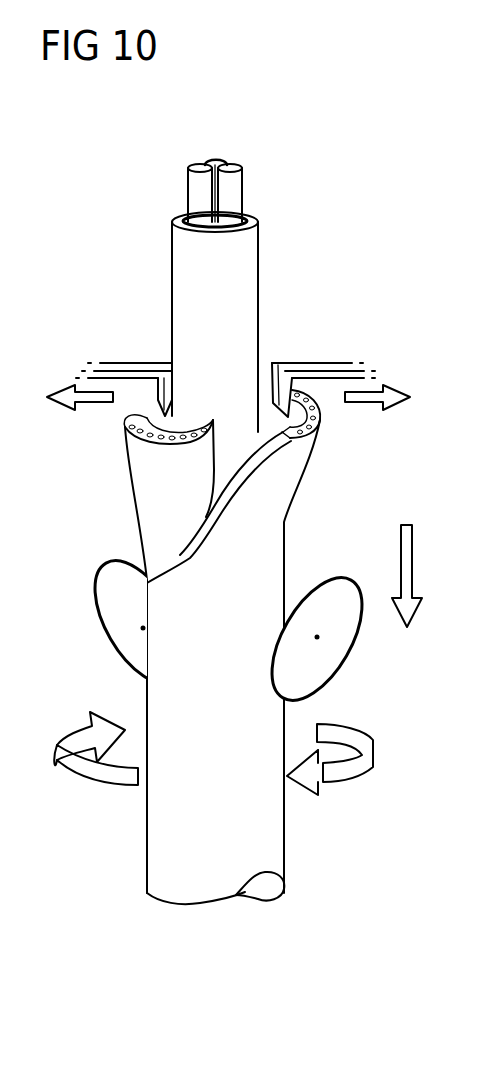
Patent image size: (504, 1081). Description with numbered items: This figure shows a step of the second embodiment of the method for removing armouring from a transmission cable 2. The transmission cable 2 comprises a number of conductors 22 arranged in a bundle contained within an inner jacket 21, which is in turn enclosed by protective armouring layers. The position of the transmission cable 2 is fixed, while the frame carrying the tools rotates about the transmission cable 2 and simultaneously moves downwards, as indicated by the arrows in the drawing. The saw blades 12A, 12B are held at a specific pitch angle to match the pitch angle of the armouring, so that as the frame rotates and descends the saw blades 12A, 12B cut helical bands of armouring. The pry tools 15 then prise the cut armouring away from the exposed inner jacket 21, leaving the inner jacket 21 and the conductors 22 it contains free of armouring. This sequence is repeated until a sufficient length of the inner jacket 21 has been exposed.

The transmission cable 2 is at (268, 833).
The inner jacket 21 is at (185, 257).
The conductors 22 is at (193, 185).
The pry tools 15 is at (128, 363).
The saw blade 12A is at (120, 622).
The saw blade 12B is at (335, 652).